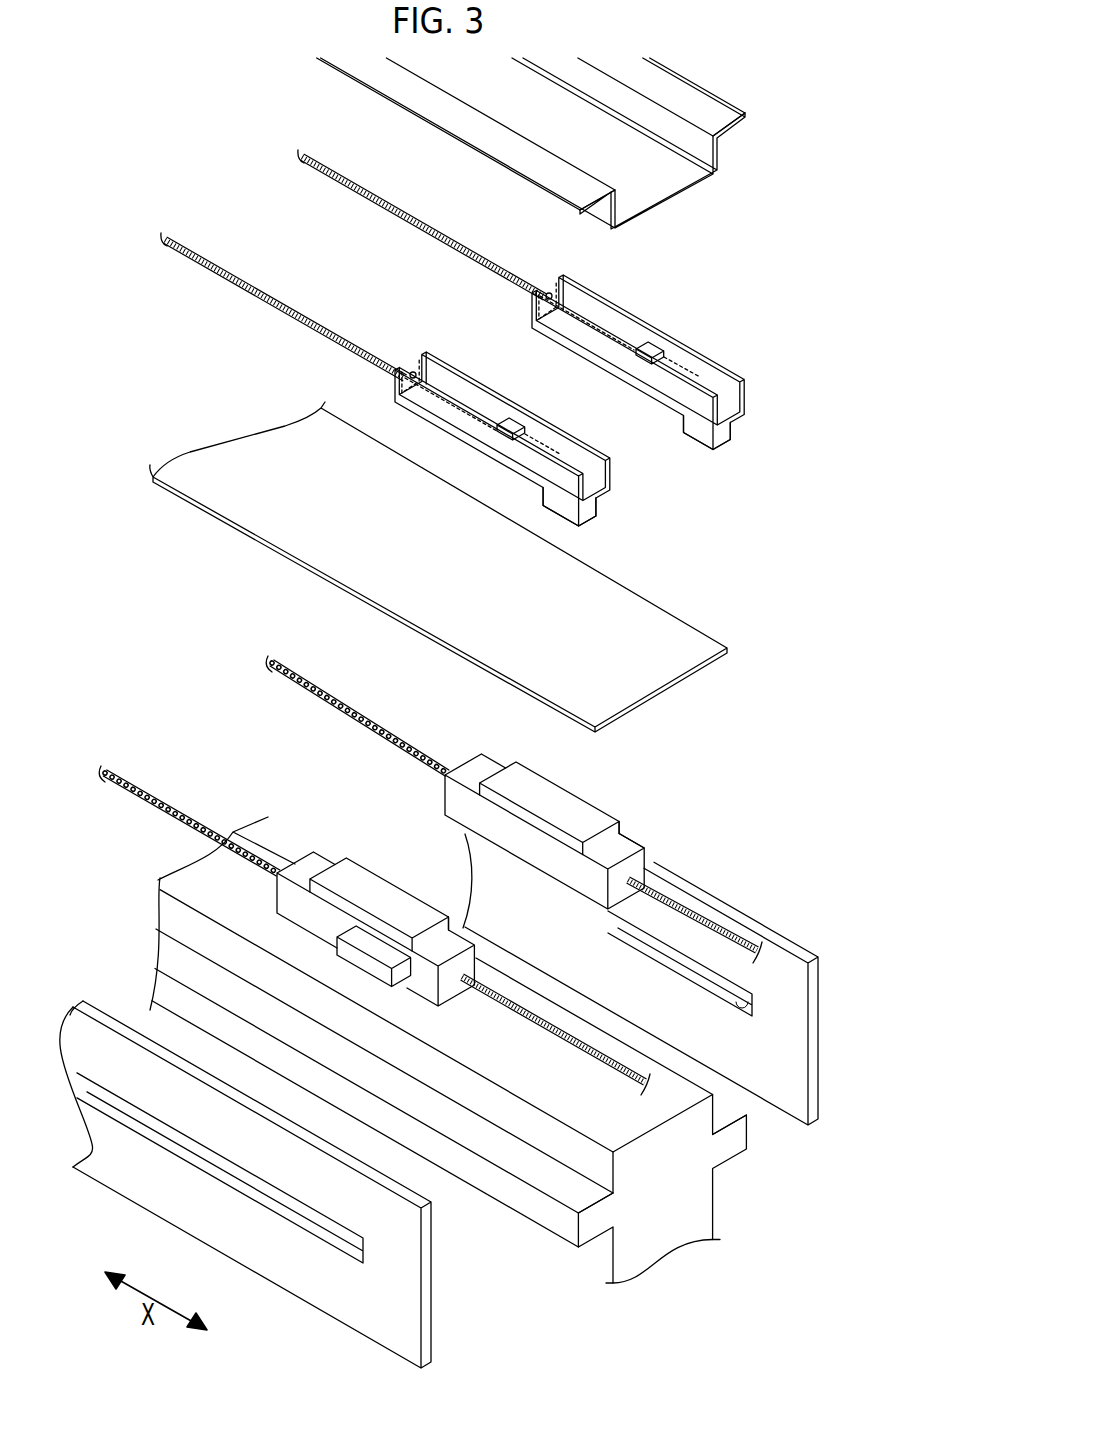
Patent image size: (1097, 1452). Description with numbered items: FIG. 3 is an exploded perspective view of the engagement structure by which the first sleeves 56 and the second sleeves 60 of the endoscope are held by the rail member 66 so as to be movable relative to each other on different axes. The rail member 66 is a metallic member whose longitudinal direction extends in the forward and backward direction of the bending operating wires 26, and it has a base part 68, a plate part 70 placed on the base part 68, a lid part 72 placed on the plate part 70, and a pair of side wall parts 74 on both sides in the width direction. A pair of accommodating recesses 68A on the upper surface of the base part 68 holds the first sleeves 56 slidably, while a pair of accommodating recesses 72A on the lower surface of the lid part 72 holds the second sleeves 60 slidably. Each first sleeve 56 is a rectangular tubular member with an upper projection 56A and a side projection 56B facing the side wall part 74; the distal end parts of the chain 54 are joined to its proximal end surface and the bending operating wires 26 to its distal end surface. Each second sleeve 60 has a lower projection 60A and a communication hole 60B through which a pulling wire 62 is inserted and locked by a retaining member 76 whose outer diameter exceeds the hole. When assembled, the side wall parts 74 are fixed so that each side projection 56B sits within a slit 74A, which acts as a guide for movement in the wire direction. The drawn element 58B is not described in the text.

The bending operating wire 26 is at (700, 920).
The chain 54 is at (336, 714).
The first sleeve 56 is at (594, 804).
The upper projection 56A is at (541, 778).
The side projection 56B is at (627, 827).
The engaging portion 58B is at (347, 961).
The second sleeve 60 is at (684, 336).
The lower projection 60A is at (742, 425).
The communication hole 60B is at (548, 291).
The pulling wire 62 is at (391, 201).
The rail member 66 is at (781, 100).
The base part 68 is at (720, 1220).
The accommodating recess 68A is at (727, 1116).
The plate part 70 is at (704, 648).
The lid part 72 is at (678, 201).
The accommodating recess 72A is at (736, 130).
The side wall part 74 is at (798, 937).
The slit 74A is at (746, 1012).
The retaining member 76 is at (648, 344).